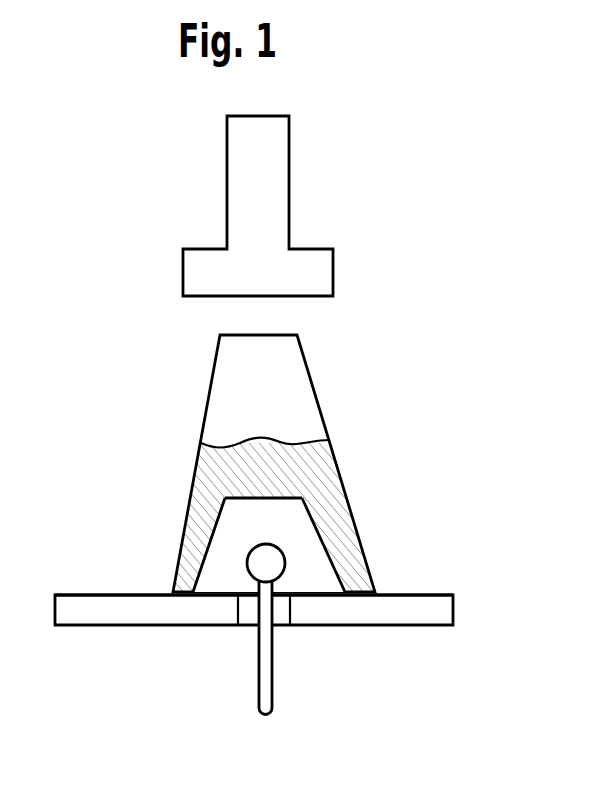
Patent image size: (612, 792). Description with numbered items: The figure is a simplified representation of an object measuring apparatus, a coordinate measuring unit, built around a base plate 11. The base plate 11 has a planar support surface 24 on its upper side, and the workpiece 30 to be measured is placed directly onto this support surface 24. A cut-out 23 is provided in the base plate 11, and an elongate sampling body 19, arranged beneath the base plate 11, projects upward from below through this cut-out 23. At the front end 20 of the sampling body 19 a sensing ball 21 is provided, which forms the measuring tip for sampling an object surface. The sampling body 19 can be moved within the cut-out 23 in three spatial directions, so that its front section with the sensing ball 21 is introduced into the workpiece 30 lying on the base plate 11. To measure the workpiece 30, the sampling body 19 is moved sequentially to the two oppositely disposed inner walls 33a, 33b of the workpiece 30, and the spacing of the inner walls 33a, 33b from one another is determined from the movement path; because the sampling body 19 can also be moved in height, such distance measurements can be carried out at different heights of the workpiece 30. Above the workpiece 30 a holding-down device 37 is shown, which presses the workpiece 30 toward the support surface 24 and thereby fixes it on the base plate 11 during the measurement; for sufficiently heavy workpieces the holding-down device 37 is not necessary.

The holding-down device 37 is at (270, 179).
The workpiece 30 is at (293, 389).
The inner wall 33a is at (212, 525).
The inner wall 33b is at (318, 527).
The front end 20 is at (280, 622).
The sensing ball 21 is at (257, 562).
The sampling body 19 is at (265, 677).
The support surface 24 is at (92, 594).
The base plate 11 is at (257, 629).
The cut-out 23 is at (250, 626).